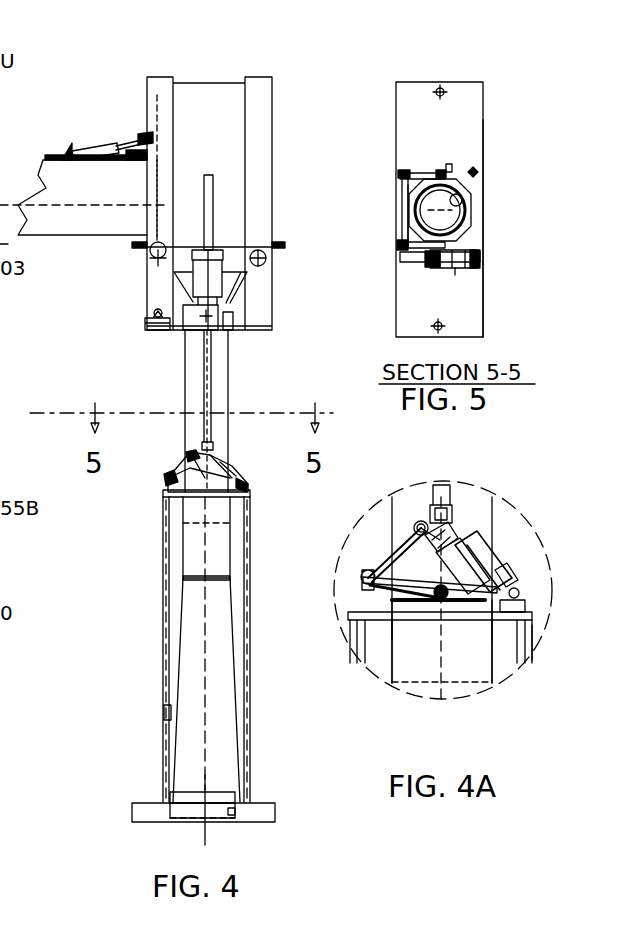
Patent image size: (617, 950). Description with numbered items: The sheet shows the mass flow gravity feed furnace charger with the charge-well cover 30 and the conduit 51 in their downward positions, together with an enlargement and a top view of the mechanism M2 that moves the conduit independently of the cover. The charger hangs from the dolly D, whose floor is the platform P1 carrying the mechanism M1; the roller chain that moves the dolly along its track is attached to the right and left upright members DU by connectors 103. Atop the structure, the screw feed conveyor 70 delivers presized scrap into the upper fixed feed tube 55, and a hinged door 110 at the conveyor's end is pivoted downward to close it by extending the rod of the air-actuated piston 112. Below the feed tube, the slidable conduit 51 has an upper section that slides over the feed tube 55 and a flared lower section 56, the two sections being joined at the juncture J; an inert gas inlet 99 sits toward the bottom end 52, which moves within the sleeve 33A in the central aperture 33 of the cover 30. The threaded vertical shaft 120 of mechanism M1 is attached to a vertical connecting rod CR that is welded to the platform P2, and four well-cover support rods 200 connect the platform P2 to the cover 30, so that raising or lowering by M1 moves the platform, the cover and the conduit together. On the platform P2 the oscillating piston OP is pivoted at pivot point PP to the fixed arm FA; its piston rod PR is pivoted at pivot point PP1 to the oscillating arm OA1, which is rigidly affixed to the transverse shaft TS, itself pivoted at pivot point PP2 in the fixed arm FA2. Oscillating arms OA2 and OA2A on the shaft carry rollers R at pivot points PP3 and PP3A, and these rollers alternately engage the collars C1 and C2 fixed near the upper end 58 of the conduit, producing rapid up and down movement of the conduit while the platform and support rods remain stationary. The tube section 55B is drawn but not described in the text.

In FIG. 4, the dolly D is at (143, 80).
In FIG. 4, the upright members of dolly DU is at (272, 98).
In FIG. 4, the screw feed conveyor 70 is at (42, 170).
In FIG. 4, the hinged door 110 is at (157, 180).
In FIG. 4, the air- or fluid-actuated piston 112 is at (98, 140).
In FIG. 4, the connectors 103 is at (132, 245).
In FIG. 4, the threaded vertical shaft 120 is at (208, 175).
In FIG. 4A, the threaded vertical shaft 120 is at (441, 488).
In FIG. 4, the mechanism for raising and lowering charge-well cover M1 is at (222, 265).
In FIG. 4, the oscillating mechanism M2 is at (165, 462).
In FIG. 5, the oscillating mechanism M2 is at (492, 270).
In FIG. 4, the platform P1 is at (150, 326).
In FIG. 4, the platform P2 is at (165, 496).
In FIG. 5, the platform P2 is at (432, 82).
In FIG. 4A, the platform P2 is at (350, 616).
In FIG. 4, the feed tube 55 is at (185, 372).
In FIG. 5, the feed tube 55 is at (465, 207).
In FIG. 4A, the feed tube 55 is at (392, 645).
In FIG. 4, the upper end of conduit 58 is at (222, 462).
In FIG. 4A, the upper end of conduit 58 is at (488, 545).
In FIG. 4, the conduit 51 is at (244, 545).
In FIG. 4, the well-cover support rods 200 is at (163, 678).
In FIG. 5, the well-cover support rods 200 is at (483, 172).
In FIG. 4A, the well-cover support rods 200 is at (533, 632).
In FIG. 4, the inner column section 55B is at (198, 525).
In FIG. 4A, the inner column section 55B is at (470, 683).
In FIG. 4, the juncture J is at (200, 578).
In FIG. 4, the lower section of conduit 56 is at (178, 636).
In FIG. 4, the inert gas inlet 99 is at (164, 712).
In FIG. 4, the sleeve 33A is at (232, 792).
In FIG. 4, the charge-well cover 30 is at (135, 803).
In FIG. 4, the central aperture 33 is at (183, 825).
In FIG. 4, the bottom end of conduit 52 is at (230, 815).
In FIG. 5, the vertical connecting rod CR is at (443, 90).
In FIG. 4A, the vertical connecting rod CR is at (418, 522).
In FIG. 5, the collar C1 is at (462, 212).
In FIG. 4A, the collar C1 is at (492, 612).
In FIG. 4A, the collar C2 is at (470, 600).
In FIG. 5, the oscillating arm OA2 is at (403, 207).
In FIG. 4A, the oscillating arm OA2 is at (395, 552).
In FIG. 5, the oscillating arm OA2A is at (415, 172).
In FIG. 5, the oscillating arm OA1 is at (410, 262).
In FIG. 4A, the oscillating arm OA1 is at (378, 578).
In FIG. 5, the transverse shaft TS is at (405, 212).
In FIG. 5, the pivot point PP3A is at (440, 170).
In FIG. 5, the roller R is at (462, 160).
In FIG. 5, the pivot point PP2 is at (398, 245).
In FIG. 4A, the pivot point PP2 is at (365, 578).
In FIG. 5, the pivot point PP3 is at (477, 255).
In FIG. 4A, the pivot point PP3 is at (432, 602).
In FIG. 4A, the pivot point PP1 is at (414, 524).
In FIG. 5, the piston rod PR is at (438, 268).
In FIG. 4A, the piston rod PR is at (446, 550).
In FIG. 5, the pivot point PP is at (482, 270).
In FIG. 4A, the pivot point PP is at (518, 582).
In FIG. 5, the oscillating piston OP is at (455, 270).
In FIG. 4A, the oscillating piston OP is at (505, 568).
In FIG. 4A, the fixed arm FA is at (520, 595).
In FIG. 4A, the fixed arm FA2 is at (365, 580).